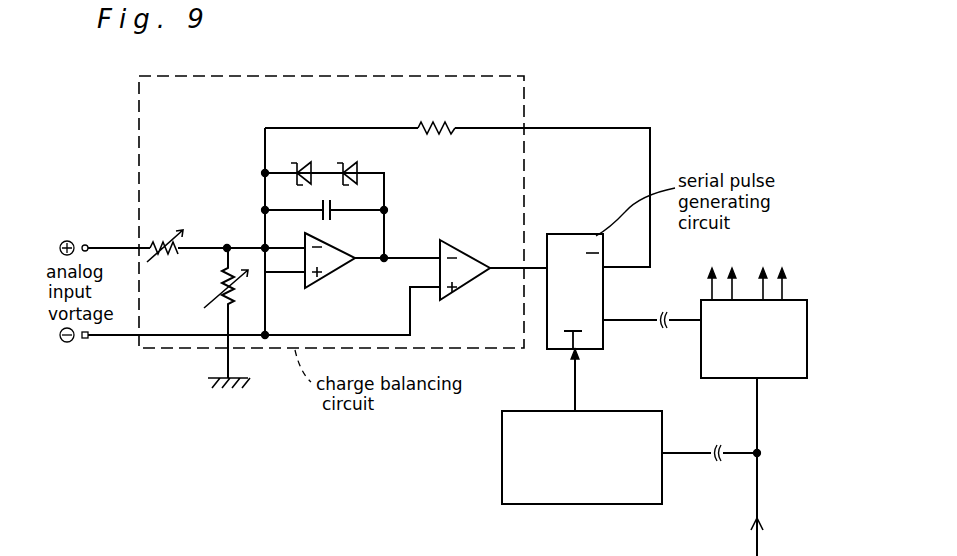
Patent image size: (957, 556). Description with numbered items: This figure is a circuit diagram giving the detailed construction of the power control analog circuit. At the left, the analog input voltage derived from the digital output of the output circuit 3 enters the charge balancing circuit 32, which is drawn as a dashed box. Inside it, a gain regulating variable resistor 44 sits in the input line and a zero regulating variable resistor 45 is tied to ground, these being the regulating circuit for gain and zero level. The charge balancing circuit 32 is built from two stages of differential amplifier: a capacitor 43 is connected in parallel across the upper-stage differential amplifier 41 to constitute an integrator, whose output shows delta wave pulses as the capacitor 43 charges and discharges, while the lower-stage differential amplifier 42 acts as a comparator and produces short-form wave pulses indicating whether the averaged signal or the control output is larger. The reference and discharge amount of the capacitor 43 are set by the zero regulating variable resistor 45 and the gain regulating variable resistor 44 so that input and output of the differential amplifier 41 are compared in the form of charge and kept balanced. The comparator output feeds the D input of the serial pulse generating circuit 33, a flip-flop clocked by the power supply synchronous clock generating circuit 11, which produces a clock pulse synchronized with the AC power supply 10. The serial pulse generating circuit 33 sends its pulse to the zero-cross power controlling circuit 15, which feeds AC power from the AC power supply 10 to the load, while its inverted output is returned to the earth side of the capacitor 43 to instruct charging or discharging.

The output circuit 3 is at (88, 244).
The gain regulating variable resistor 44 is at (167, 232).
The zero regulating variable resistor 45 is at (243, 333).
The upper-stage differential amplifier 41 is at (325, 277).
The lower-stage differential amplifier 42 is at (465, 262).
The capacitor 43 is at (332, 203).
The serial pulse generating circuit 33 is at (577, 246).
The charge balancing circuit 32 is at (160, 350).
The zero-cross power controlling circuit 15 is at (789, 370).
The power supply synchronous clock generating circuit 11 is at (621, 497).
The AC power supply 10 is at (757, 522).